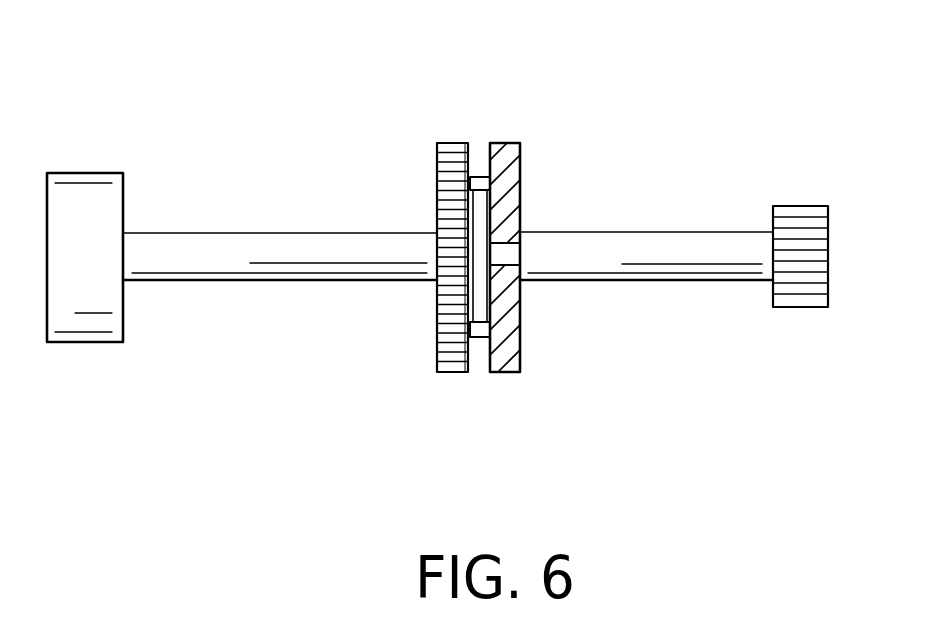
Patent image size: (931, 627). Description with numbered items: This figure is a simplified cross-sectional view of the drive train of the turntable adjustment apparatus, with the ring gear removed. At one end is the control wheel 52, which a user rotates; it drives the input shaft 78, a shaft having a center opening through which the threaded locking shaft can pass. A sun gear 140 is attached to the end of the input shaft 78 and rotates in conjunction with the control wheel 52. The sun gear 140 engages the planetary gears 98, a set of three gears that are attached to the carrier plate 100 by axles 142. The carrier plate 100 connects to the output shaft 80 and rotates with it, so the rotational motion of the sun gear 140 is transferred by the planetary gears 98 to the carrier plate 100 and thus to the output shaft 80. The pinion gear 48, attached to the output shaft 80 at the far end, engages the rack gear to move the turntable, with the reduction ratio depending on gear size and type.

The pinion gear 48 is at (810, 297).
The control wheel 52 is at (95, 307).
The input shaft 78 is at (192, 263).
The output shaft 80 is at (587, 267).
The planetary gears 98 is at (452, 150).
The carrier plate 100 is at (498, 144).
The sun gear 140 is at (437, 292).
The axles 142 is at (478, 176).